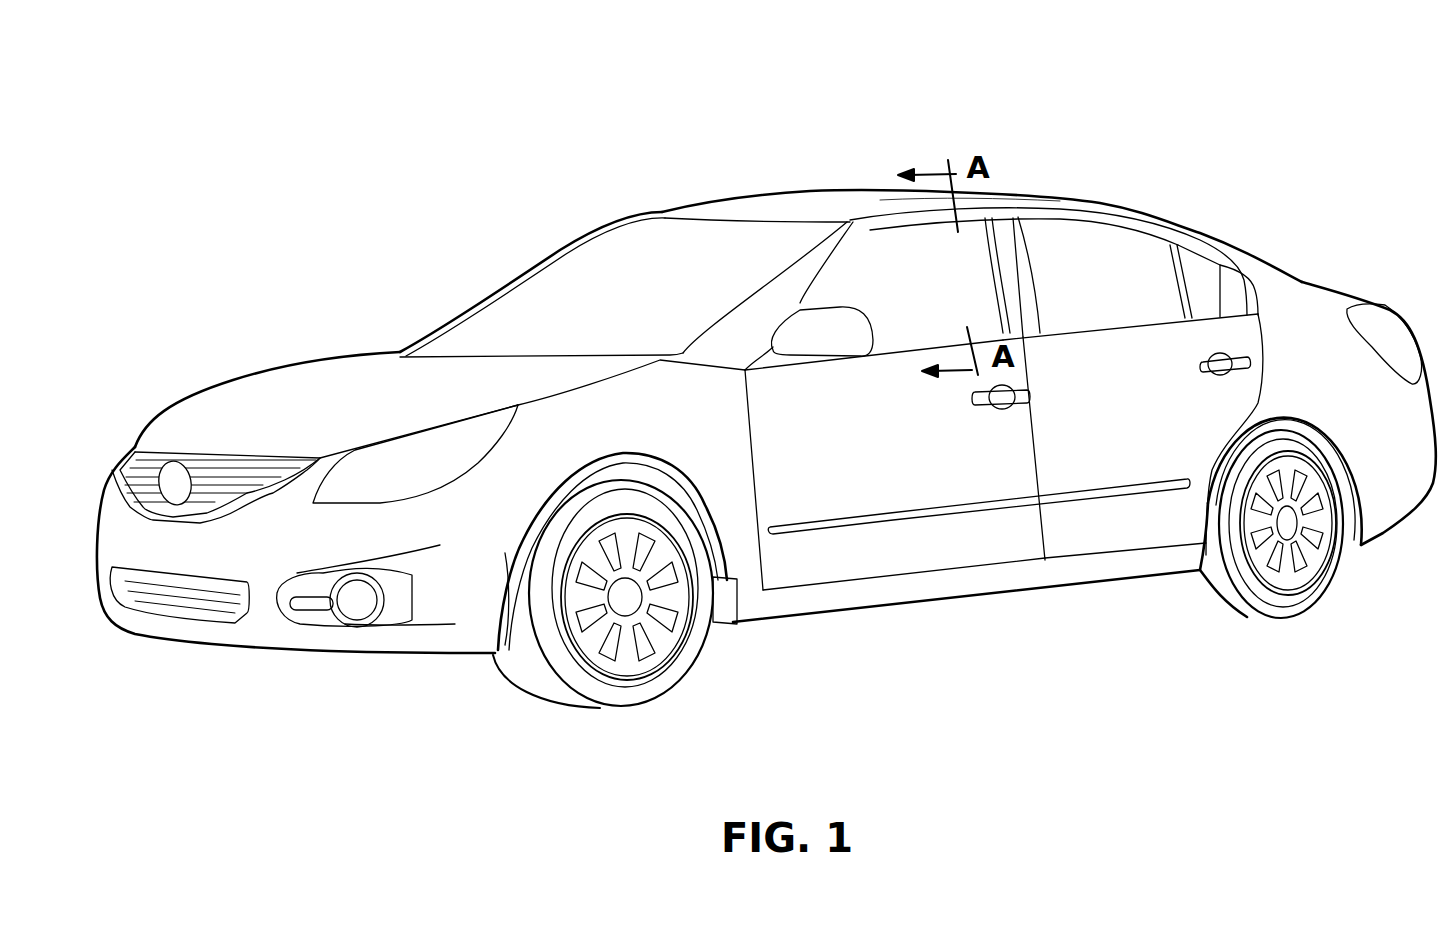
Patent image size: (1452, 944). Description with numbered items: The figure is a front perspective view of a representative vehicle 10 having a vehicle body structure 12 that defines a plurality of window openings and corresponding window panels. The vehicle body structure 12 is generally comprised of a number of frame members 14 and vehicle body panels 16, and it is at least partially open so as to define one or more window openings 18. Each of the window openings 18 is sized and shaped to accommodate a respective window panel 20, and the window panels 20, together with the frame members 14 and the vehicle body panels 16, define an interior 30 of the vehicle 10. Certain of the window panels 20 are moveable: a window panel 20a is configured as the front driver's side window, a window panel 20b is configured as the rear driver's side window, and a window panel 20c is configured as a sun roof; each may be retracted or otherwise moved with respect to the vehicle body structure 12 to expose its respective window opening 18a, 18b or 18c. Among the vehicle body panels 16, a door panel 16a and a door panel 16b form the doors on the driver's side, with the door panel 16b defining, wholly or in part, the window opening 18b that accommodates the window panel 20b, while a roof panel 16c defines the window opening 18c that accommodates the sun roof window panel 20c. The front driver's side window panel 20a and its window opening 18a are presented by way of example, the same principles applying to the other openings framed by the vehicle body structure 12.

The vehicle 10 is at (350, 352).
The vehicle body structure 12 is at (725, 77).
The frame members 14 is at (793, 277).
The vehicle body panels 16 is at (979, 506).
The door panel 16a is at (913, 547).
The door panel 16b is at (1127, 523).
The roof panel 16c is at (1030, 203).
The window openings 18 is at (617, 240).
The window opening 18a is at (905, 342).
The window opening 18b is at (1117, 318).
The window opening 18c is at (885, 202).
The window panels 20 is at (611, 306).
The window panel 20a is at (977, 321).
The window panel 20b is at (1070, 295).
The window panel 20c is at (864, 200).
The interior 30 is at (1112, 240).